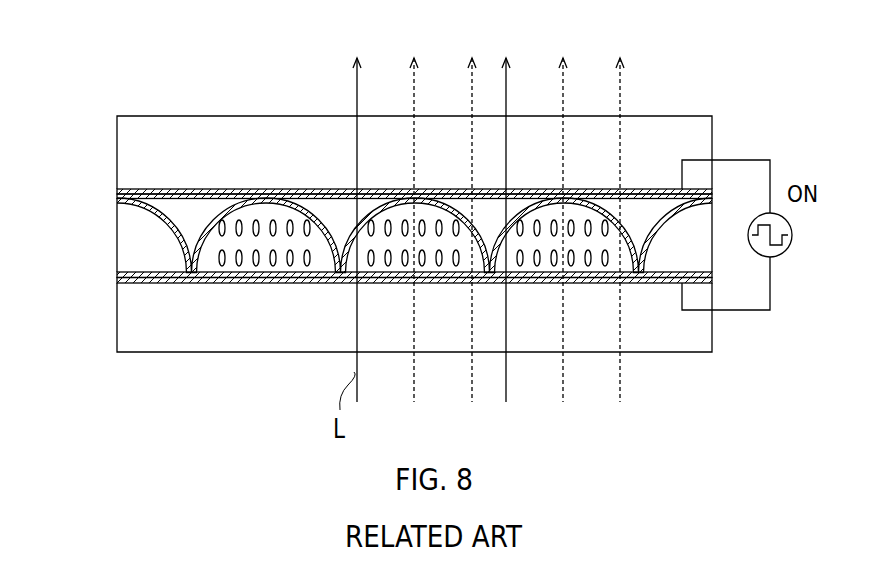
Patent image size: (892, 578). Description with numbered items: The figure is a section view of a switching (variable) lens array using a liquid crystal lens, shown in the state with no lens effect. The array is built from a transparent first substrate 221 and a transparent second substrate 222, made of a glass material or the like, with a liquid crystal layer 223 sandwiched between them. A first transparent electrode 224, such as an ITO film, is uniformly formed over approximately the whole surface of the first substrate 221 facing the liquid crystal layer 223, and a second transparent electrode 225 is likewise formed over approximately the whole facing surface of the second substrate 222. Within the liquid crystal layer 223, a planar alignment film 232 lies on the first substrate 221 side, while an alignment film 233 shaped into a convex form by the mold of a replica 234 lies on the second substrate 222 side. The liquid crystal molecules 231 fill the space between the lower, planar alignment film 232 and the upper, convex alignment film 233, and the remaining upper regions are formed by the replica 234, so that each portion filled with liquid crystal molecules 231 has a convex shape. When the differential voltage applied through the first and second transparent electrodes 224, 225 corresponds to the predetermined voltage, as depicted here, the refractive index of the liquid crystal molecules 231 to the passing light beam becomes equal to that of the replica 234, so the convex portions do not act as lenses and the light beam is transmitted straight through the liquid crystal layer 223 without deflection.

The first substrate 221 is at (124, 314).
The second substrate 222 is at (124, 152).
The liquid crystal layer 223 is at (124, 246).
The first transparent electrode 224 is at (670, 285).
The second transparent electrode 225 is at (660, 188).
The liquid crystal molecules 231 is at (287, 222).
The alignment film 232 is at (124, 276).
The alignment film 233 is at (124, 199).
The replica 234 is at (181, 210).